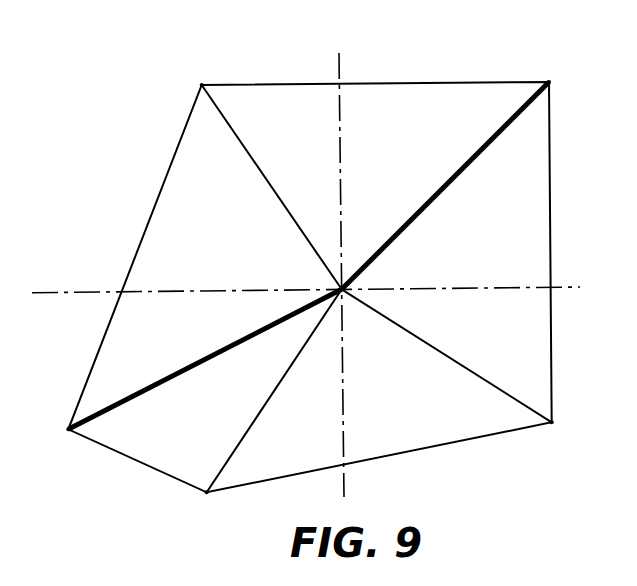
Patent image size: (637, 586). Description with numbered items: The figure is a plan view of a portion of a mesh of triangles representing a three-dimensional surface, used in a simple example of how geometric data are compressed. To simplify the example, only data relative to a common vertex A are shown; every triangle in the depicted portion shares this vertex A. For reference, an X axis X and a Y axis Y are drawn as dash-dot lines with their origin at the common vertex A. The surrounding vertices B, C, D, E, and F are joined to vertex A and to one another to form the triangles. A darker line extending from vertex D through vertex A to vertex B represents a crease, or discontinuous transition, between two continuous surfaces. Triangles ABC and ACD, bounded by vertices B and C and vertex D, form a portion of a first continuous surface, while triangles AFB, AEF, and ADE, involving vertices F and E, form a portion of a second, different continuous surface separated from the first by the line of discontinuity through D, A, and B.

The common vertex A is at (357, 284).
The vertex B is at (557, 78).
The vertex C is at (194, 75).
The vertex D is at (58, 433).
The vertex E is at (205, 504).
The vertex F is at (561, 432).
The X axis X is at (312, 279).
The Y axis Y is at (341, 257).